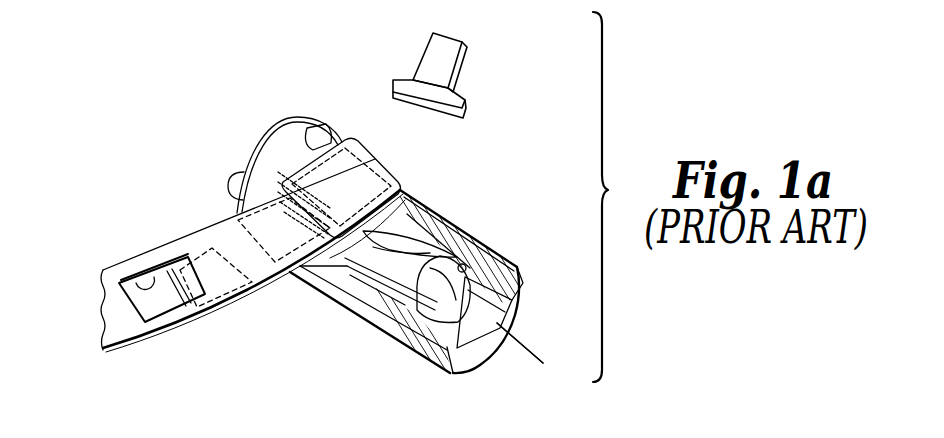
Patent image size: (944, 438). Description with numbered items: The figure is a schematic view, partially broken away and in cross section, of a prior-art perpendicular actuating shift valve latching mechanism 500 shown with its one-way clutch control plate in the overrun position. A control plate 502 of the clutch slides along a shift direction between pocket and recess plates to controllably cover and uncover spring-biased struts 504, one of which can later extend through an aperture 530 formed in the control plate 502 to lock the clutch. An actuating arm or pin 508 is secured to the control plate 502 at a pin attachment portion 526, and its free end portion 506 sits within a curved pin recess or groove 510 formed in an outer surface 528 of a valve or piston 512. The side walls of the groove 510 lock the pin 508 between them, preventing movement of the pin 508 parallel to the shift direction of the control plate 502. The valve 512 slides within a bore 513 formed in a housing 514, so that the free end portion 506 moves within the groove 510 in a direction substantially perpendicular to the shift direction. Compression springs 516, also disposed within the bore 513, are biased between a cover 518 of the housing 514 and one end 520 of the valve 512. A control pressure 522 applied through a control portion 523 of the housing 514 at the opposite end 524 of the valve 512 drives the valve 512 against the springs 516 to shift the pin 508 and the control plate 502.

The latching mechanism 500 is at (403, 198).
The control plate 502 is at (170, 322).
The struts 504 is at (175, 292).
The free end portion 506 is at (347, 250).
The actuating arm 508 is at (375, 229).
The curved pin recess 510 is at (425, 232).
The valve 512 is at (402, 285).
The bore 513 is at (466, 264).
The housing 514 is at (523, 272).
The compression springs 516 is at (292, 178).
The cover 518 is at (258, 150).
The one end 520 is at (274, 278).
The control pressure 522 is at (527, 360).
The control portion 523 is at (488, 320).
The opposite end 524 is at (453, 374).
The pin attachment portion 526 is at (352, 160).
The outer surface 528 is at (373, 293).
The aperture 530 is at (130, 282).